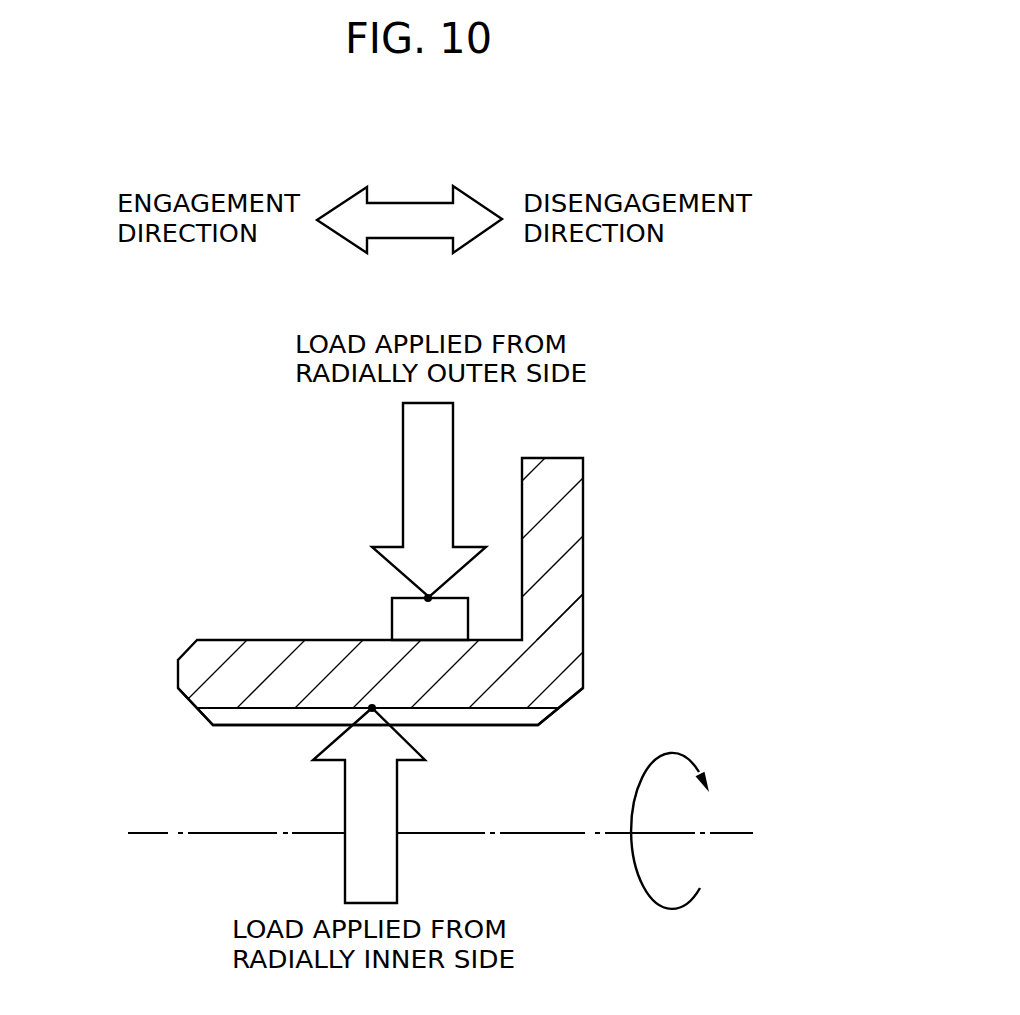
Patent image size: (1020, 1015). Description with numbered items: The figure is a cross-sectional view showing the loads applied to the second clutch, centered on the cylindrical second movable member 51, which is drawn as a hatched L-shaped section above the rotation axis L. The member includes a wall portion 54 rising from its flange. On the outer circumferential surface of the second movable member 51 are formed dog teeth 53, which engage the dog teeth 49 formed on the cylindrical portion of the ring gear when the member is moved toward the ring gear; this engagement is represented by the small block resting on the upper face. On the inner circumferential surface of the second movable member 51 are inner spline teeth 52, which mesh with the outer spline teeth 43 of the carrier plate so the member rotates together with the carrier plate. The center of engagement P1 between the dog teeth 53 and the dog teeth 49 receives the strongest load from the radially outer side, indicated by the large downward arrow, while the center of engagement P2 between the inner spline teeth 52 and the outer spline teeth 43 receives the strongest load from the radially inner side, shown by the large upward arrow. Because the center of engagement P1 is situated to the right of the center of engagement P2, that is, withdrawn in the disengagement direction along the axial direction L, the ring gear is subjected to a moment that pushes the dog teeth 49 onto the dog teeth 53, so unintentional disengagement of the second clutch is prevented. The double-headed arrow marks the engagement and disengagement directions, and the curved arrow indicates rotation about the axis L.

The second movable member 51 is at (481, 615).
The wall portion of member 51 54 is at (568, 572).
The dog teeth 49 is at (335, 618).
The dog teeth 53 is at (400, 621).
The outer spline teeth 43 is at (380, 742).
The inner spline teeth 52 is at (277, 717).
The center of engagement P1 is at (425, 596).
The center of engagement P2 is at (375, 710).
The axial direction L is at (160, 828).